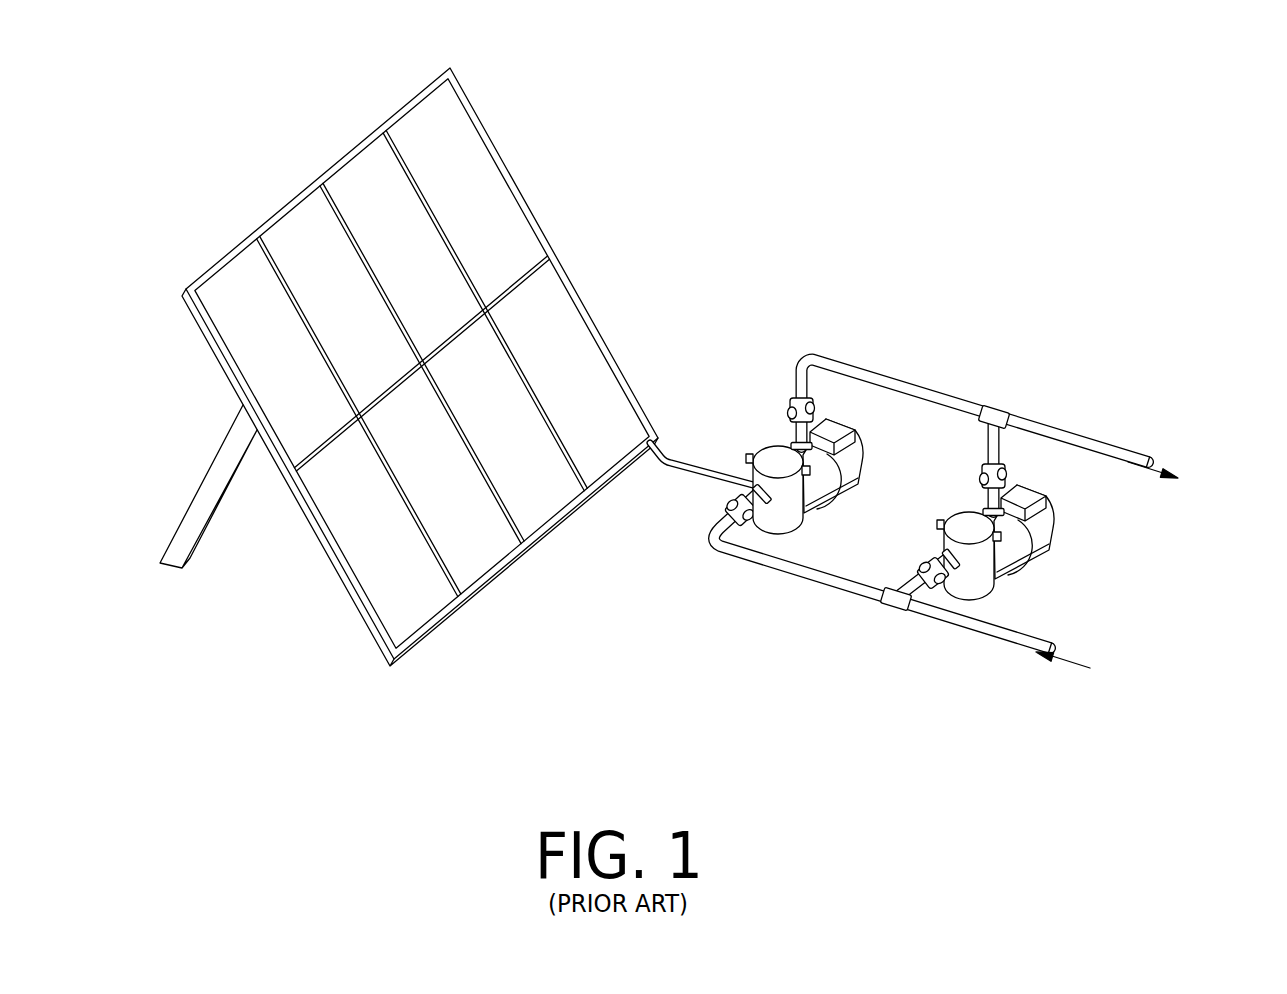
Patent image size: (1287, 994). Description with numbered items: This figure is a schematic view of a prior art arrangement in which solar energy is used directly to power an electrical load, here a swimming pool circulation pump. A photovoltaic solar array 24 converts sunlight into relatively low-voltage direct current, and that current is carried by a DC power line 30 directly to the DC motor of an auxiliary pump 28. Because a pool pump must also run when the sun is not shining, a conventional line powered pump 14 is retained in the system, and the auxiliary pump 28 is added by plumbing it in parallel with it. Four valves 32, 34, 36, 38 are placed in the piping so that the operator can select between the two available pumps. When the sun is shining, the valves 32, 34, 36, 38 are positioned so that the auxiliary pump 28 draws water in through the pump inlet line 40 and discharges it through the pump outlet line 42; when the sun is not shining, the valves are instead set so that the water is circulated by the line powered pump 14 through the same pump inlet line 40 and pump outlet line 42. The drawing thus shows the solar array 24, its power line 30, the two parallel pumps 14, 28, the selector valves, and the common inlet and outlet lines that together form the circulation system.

The line powered pump 14 is at (1008, 550).
The solar array 24 is at (470, 190).
The auxiliary pump 28 is at (783, 510).
The DC power line 30 is at (703, 465).
The valve 32 is at (945, 548).
The valve 34 is at (730, 520).
The valve 36 is at (998, 458).
The valve 38 is at (805, 400).
The pump inlet line 40 is at (997, 657).
The pump outlet line 42 is at (1060, 442).